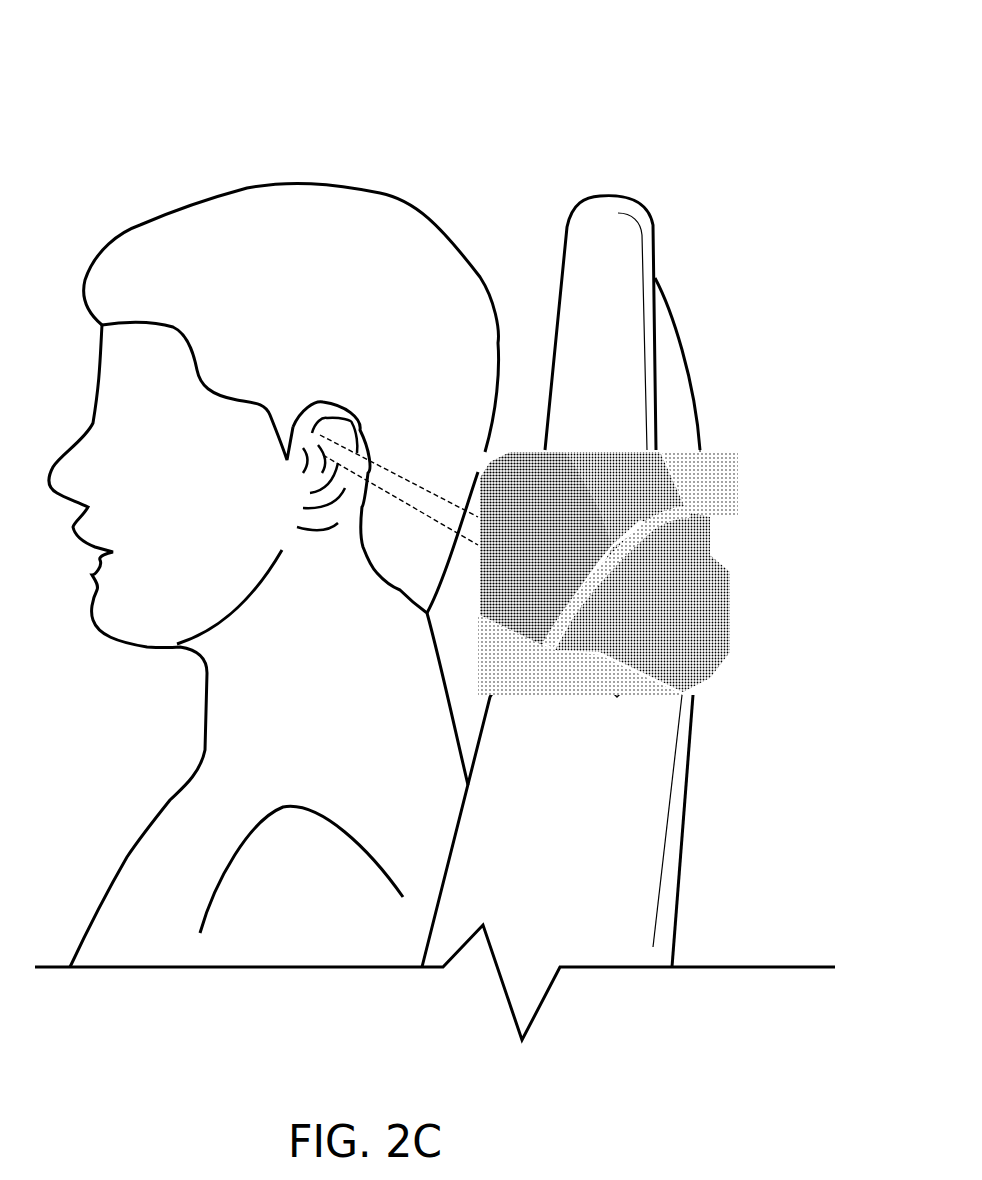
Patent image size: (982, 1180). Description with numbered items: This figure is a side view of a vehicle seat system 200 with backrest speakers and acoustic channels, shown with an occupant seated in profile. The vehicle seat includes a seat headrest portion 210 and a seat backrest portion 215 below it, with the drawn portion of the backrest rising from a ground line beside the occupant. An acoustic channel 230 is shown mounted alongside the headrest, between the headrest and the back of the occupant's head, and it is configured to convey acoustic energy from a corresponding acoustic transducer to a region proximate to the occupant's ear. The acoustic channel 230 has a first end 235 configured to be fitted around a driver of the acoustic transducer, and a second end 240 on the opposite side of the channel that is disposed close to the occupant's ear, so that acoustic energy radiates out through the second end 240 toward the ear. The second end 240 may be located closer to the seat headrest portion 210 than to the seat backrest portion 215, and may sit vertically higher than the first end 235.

The vehicle seat system 200 is at (90, 66).
The seat headrest portion 210 is at (628, 298).
The seat backrest portion 215 is at (605, 880).
The acoustic channel 230 is at (610, 510).
The first end 235 is at (625, 540).
The second end 240 is at (518, 452).